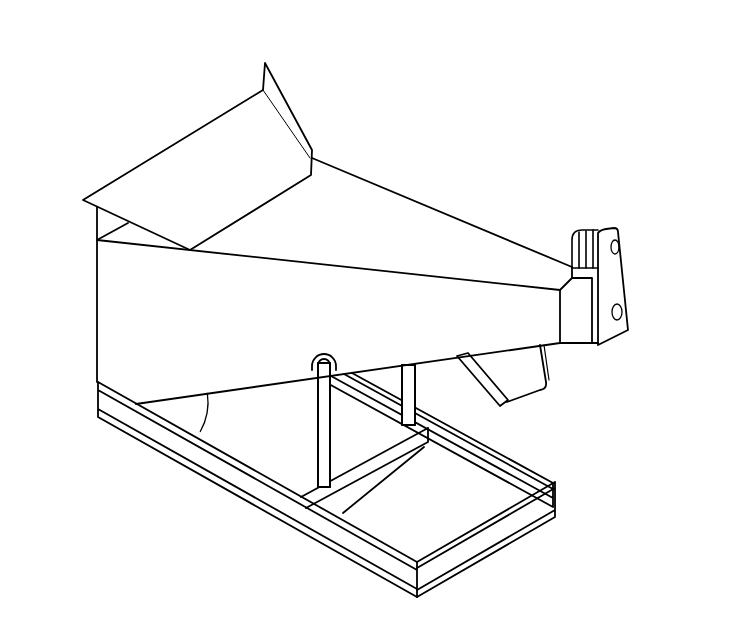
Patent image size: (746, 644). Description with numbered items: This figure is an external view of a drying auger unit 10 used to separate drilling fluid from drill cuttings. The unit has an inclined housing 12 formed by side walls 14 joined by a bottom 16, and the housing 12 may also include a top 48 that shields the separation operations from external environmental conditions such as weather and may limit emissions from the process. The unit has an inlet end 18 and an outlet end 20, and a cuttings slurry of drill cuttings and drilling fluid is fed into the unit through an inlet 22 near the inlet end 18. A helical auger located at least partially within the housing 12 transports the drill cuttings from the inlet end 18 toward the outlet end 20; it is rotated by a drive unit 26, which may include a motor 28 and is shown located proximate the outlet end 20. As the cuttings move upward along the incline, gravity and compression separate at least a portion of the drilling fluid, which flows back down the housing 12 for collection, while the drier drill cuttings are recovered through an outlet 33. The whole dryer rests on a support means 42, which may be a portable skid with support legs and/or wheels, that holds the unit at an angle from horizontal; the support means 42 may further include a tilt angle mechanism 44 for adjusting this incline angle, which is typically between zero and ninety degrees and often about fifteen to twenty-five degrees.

The drying auger unit 10 is at (503, 77).
The inclined housing 12 is at (294, 294).
The side walls 14 is at (173, 337).
The bottom 16 is at (437, 368).
The inlet end 18 is at (97, 283).
The outlet end 20 is at (535, 272).
The inlet 22 is at (195, 163).
The drive unit 26 is at (630, 308).
The motor 28 is at (620, 236).
The outlet 33 is at (519, 380).
The support means 42 is at (332, 477).
The tilt angle mechanism 44 is at (317, 437).
The top 48 is at (402, 218).